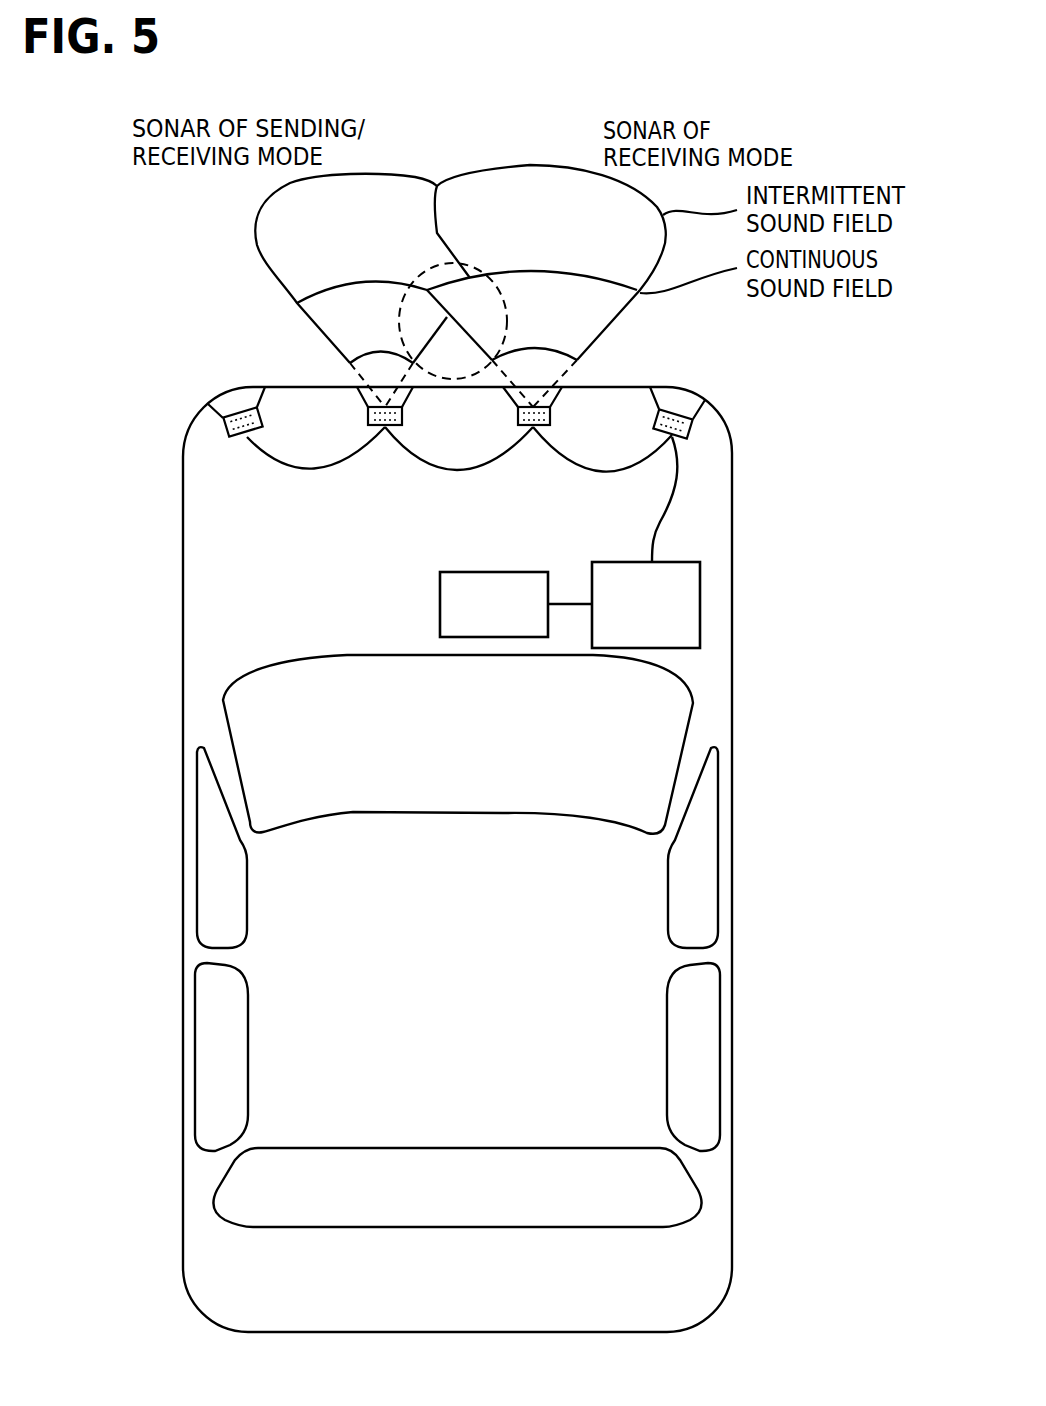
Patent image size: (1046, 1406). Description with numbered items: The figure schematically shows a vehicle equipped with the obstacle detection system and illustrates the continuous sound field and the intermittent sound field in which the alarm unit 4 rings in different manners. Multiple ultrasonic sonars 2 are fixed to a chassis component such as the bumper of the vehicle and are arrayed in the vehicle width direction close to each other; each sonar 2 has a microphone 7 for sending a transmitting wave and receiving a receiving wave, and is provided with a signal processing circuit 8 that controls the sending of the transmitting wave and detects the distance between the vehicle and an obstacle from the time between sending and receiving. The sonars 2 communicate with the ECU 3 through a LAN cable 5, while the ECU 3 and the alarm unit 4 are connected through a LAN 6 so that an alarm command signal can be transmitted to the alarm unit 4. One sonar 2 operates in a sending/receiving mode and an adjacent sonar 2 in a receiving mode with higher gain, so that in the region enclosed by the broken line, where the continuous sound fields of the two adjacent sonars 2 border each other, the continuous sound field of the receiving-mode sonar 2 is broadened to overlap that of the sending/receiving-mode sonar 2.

The ultrasonic sonar 2 is at (203, 418).
The control unit 3 is at (700, 600).
The alarm unit 4 is at (470, 572).
The LAN cable 5 is at (653, 535).
The LAN 6 is at (575, 603).
The microphone 7 is at (221, 423).
The signal processing circuit 8 is at (262, 422).